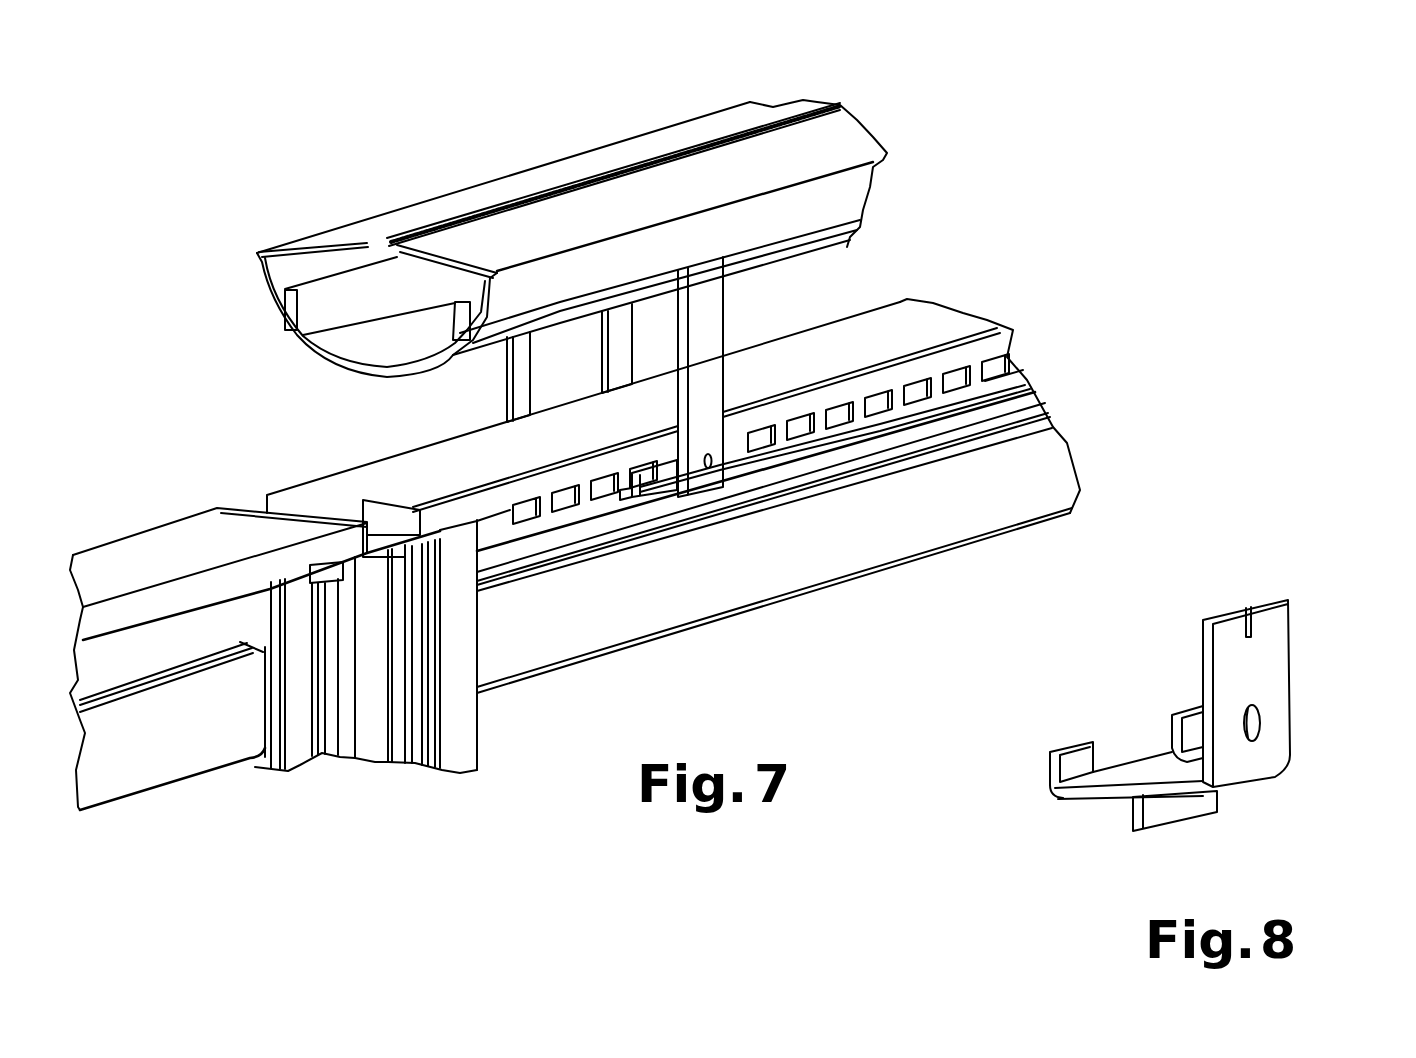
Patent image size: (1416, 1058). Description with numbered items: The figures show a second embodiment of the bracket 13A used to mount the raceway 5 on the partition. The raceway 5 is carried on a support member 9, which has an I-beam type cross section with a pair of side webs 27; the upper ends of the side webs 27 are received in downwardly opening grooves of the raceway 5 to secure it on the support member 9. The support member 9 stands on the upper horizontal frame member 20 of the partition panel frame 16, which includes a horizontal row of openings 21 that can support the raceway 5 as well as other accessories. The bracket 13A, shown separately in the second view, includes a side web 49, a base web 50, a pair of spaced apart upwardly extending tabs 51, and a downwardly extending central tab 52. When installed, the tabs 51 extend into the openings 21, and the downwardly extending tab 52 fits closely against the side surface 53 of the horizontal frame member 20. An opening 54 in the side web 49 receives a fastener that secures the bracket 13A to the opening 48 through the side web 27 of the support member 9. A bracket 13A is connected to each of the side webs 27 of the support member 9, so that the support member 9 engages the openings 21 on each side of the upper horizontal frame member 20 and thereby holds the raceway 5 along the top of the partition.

In FIG. 7, the raceway member 5 is at (493, 180).
In FIG. 7, the support member 9 is at (727, 311).
In FIG. 7, the bracket 13A is at (480, 420).
In FIG. 8, the bracket 13A is at (1209, 704).
In FIG. 7, the partition panel frame 16 is at (478, 723).
In FIG. 7, the upper horizontal frame member 20 is at (975, 522).
In FIG. 7, the openings 21 is at (337, 468).
In FIG. 7, the side webs 27 is at (500, 355).
In FIG. 7, the opening 48 is at (722, 462).
In FIG. 8, the side web 49 is at (1263, 662).
In FIG. 8, the base web 50 is at (1097, 800).
In FIG. 8, the upwardly extending tabs 51 is at (1073, 743).
In FIG. 8, the downwardly extending central tab 52 is at (1180, 810).
In FIG. 7, the side surface 53 is at (987, 387).
In FIG. 8, the opening 54 is at (1260, 722).